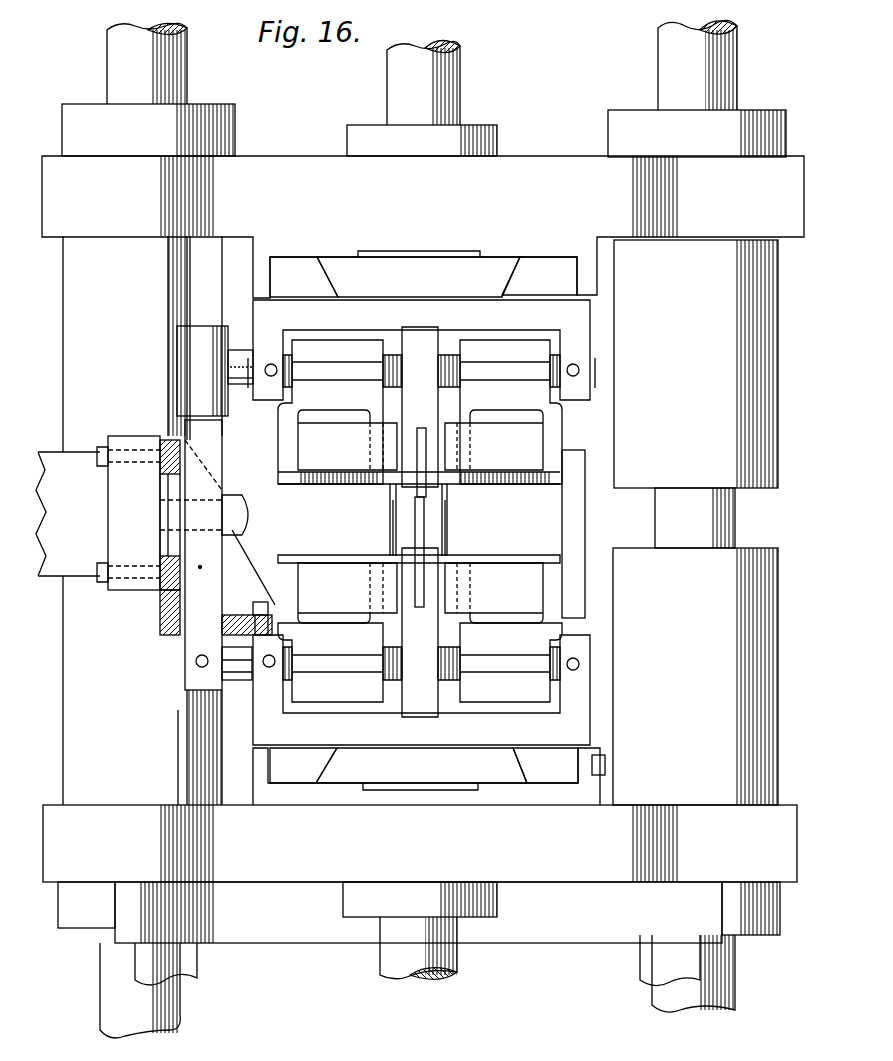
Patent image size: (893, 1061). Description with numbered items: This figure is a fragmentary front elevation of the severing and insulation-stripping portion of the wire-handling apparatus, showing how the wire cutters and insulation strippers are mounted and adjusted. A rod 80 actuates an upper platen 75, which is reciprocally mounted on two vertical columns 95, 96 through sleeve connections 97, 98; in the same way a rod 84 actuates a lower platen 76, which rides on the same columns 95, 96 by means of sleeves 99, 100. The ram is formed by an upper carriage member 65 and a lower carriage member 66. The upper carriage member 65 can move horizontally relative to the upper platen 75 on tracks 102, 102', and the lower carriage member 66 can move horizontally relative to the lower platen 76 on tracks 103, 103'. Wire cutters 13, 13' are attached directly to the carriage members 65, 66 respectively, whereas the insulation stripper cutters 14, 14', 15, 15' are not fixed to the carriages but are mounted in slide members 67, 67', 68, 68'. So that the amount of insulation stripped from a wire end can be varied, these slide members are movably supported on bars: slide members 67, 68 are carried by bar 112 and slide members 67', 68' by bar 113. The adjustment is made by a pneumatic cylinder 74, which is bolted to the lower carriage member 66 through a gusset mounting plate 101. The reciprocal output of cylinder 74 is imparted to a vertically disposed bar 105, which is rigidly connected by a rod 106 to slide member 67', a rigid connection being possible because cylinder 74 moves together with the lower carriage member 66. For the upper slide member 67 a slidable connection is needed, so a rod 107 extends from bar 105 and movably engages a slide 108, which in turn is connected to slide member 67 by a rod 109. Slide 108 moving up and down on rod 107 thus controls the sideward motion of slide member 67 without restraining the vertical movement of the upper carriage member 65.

The wire cutter 13 is at (413, 471).
The wire cutter 13' is at (448, 552).
The wire insulation stripper cutter 14 is at (380, 520).
The wire insulation stripper cutter 14' is at (376, 528).
The wire insulation stripper cutter 15 is at (461, 520).
The wire insulation stripper cutter 15' is at (466, 528).
The upper carriage member 65 is at (578, 348).
The lower carriage member 66 is at (268, 705).
The slide member 67 is at (330, 412).
The slide member 68 is at (511, 412).
The slide member 67' is at (330, 662).
The slide member 68' is at (511, 662).
The pneumatic cylinder 74 is at (136, 528).
The upper platen 75 is at (520, 170).
The lower platen 76 is at (567, 868).
The rod 80 is at (447, 77).
The rod 84 is at (450, 960).
The vertical column 95 is at (178, 75).
The vertical column 96 is at (718, 58).
The sleeve connection 97 is at (75, 312).
The sleeve connection 98 is at (750, 326).
The sleeve 99 is at (70, 700).
The sleeve 100 is at (735, 702).
The gusset mounting plate 101 is at (160, 625).
The track 102 is at (304, 277).
The track 102' is at (539, 276).
The track 103 is at (322, 765).
The track 103' is at (530, 765).
The vertically disposed bar 105 is at (200, 567).
The rod 106 is at (233, 655).
The rod 107 is at (212, 278).
The slide 108 is at (190, 362).
The rod 109 is at (240, 360).
The bar 112 is at (394, 362).
The bar 113 is at (447, 666).